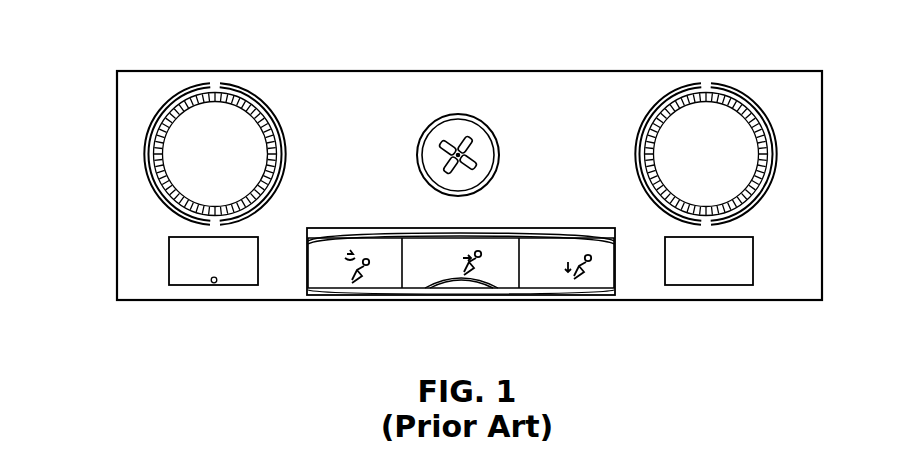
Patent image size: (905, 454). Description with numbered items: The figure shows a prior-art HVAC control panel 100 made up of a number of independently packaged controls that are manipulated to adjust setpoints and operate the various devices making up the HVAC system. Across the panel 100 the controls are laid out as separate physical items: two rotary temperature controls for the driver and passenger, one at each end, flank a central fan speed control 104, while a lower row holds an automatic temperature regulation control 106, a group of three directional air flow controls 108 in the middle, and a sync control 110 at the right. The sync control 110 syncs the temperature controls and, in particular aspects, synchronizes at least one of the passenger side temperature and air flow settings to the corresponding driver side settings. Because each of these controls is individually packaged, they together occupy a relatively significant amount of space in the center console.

The HVAC control panel 100 is at (108, 16).
The fan speed controls 104 is at (452, 128).
The automatic temperature regulation controls 106 is at (214, 284).
The directional air flow controls 108 is at (355, 284).
The sync control 110 is at (710, 285).